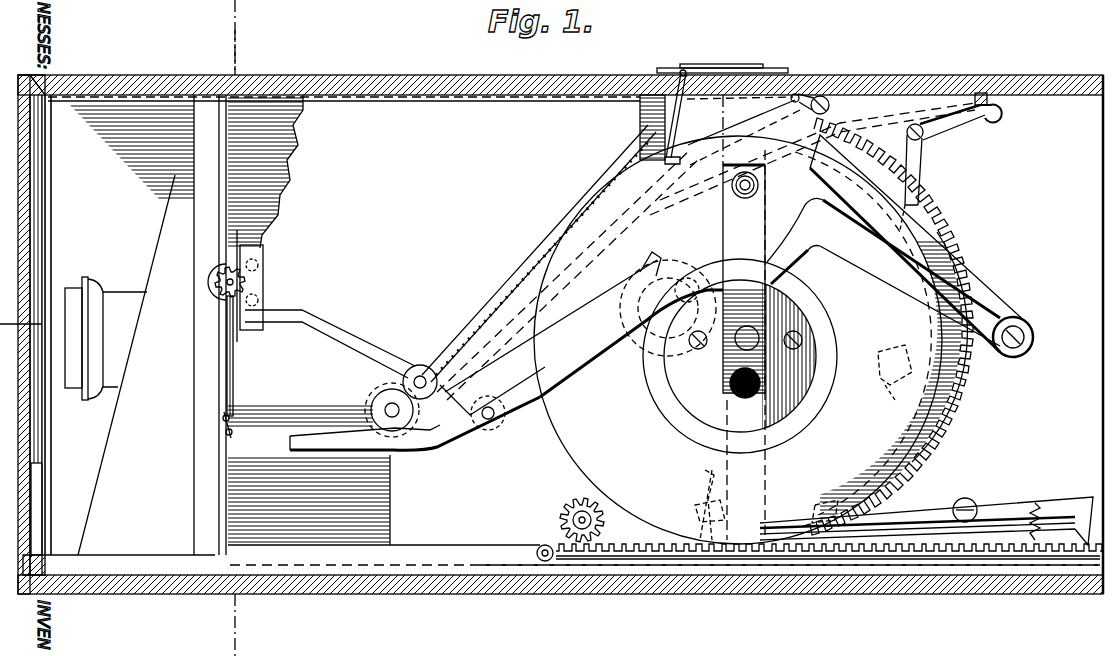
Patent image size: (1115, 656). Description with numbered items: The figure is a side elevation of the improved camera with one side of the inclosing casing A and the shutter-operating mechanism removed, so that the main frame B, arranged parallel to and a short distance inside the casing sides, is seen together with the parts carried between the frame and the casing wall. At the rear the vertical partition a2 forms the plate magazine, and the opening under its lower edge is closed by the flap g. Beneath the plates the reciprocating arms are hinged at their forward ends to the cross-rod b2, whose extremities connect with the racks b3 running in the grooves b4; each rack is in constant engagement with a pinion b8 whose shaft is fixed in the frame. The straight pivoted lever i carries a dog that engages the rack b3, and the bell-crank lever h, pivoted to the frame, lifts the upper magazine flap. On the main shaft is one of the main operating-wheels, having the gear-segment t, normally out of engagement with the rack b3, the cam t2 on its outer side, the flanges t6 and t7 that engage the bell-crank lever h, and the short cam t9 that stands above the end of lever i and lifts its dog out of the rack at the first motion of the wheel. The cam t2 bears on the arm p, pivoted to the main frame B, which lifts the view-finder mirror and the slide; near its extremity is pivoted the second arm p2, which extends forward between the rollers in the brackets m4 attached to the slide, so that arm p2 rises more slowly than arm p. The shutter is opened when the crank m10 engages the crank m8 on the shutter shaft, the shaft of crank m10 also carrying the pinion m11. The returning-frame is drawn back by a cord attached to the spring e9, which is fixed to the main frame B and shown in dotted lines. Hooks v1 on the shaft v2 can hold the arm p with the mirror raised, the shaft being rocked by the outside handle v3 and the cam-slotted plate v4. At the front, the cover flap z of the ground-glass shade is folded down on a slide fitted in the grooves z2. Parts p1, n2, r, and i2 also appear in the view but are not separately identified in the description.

The inclosing casing A is at (407, 585).
The main frame B is at (750, 349).
The flap g is at (231, 37).
The cover flap z is at (45, 200).
The grooves z2 is at (33, 500).
The brackets m4 is at (263, 300).
The crank m8 is at (222, 428).
The crank m10 is at (228, 315).
The pinion m11 is at (212, 282).
The arm p is at (736, 306).
The lever beam p1 is at (403, 432).
The second arm p2 is at (333, 322).
The link strip n2 is at (520, 297).
The follower r is at (652, 262).
The gear-segment t is at (925, 435).
The cam t2 is at (820, 330).
The flange t6 is at (984, 93).
The flange t7 is at (960, 375).
The short cam t9 is at (827, 498).
The spring e9 is at (878, 402).
The vertical partition a2 is at (705, 488).
The cross-rod b2 is at (545, 562).
The rack b3 is at (668, 553).
The groove b4 is at (482, 567).
The pinion b8 is at (560, 512).
The straight pivoted lever i is at (968, 500).
The spring i2 is at (1037, 515).
The bell-crank lever h is at (935, 130).
The hooks v1 is at (680, 112).
The shaft v2 is at (718, 103).
The handle v3 is at (725, 68).
The plate v4 is at (795, 94).